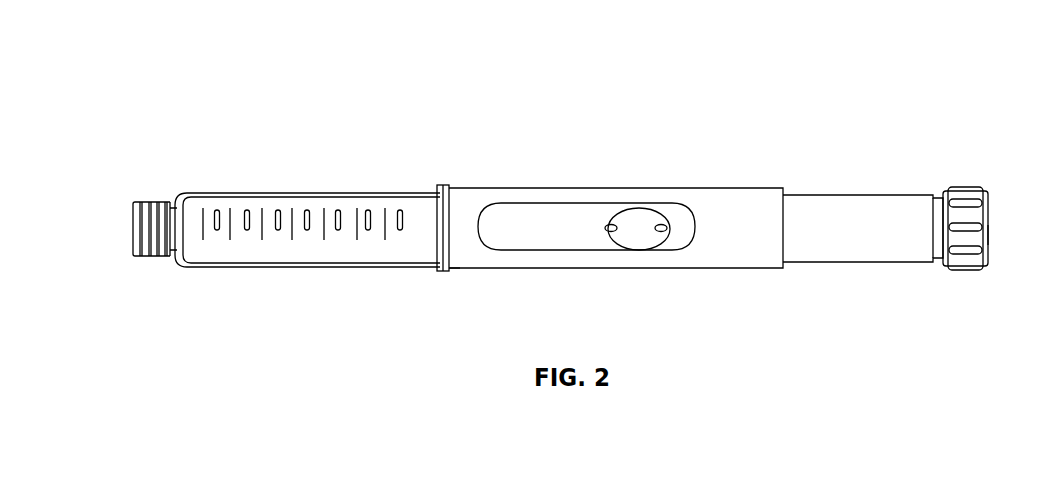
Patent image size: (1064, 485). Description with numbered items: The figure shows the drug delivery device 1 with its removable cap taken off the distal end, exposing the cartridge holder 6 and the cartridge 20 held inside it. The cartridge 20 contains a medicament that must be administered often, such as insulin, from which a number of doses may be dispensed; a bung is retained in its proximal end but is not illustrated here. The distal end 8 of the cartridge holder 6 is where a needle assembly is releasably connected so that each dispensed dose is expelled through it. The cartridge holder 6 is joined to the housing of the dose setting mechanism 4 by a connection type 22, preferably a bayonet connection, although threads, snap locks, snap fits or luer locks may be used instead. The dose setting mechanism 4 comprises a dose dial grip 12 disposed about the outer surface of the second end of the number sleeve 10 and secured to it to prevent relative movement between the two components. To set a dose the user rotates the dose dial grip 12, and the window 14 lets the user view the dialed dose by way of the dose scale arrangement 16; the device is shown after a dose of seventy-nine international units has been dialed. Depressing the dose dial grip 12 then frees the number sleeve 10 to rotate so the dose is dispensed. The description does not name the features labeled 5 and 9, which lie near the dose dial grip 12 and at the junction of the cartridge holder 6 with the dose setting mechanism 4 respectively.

The drug delivery device 1 is at (495, 72).
The dose setting mechanism 4 is at (654, 150).
The proximal end 5 is at (989, 233).
The cartridge holder 6 is at (307, 192).
The distal end 8 is at (153, 201).
The connecting ring 9 is at (442, 186).
The number sleeve 10 is at (862, 195).
The dose dial grip 12 is at (985, 190).
The window 14 is at (652, 243).
The dose scale arrangement 16 is at (633, 243).
The cartridge 20 is at (246, 192).
The connection type 22 is at (452, 284).